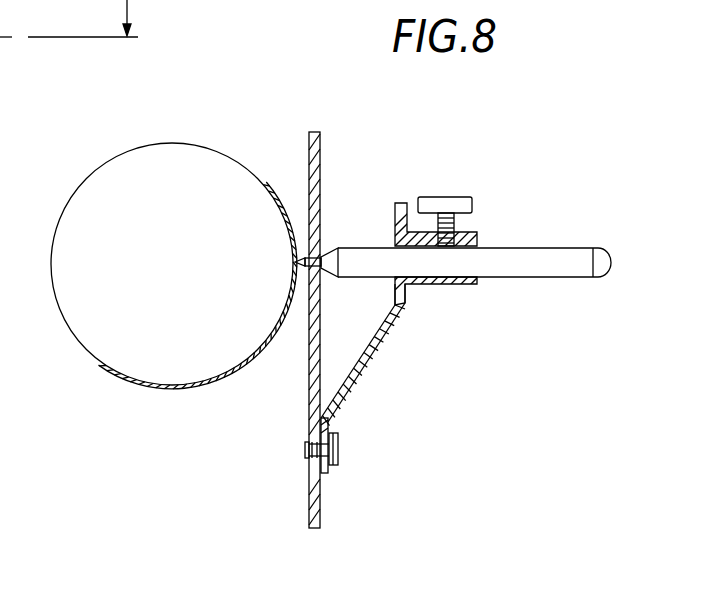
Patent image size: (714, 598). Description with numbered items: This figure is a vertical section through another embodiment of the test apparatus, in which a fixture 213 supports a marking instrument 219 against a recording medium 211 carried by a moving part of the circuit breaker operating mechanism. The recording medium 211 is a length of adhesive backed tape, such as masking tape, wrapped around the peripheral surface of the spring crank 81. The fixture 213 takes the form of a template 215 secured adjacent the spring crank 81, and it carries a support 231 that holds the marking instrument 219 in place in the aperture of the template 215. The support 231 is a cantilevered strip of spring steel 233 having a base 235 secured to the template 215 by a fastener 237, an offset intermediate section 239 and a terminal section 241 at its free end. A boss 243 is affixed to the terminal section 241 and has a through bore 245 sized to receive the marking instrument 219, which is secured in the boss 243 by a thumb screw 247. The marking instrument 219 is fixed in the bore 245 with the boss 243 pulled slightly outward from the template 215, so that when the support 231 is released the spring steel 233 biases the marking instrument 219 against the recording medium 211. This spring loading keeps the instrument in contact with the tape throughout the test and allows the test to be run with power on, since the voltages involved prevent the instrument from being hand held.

The spring crank 81 is at (53, 237).
The recording medium 211 is at (139, 383).
The fixture 213 is at (516, 134).
The template 215 is at (321, 148).
The marking instrument 219 is at (550, 268).
The support 231 is at (368, 380).
The cantilevered strip of spring steel 233 is at (402, 364).
The base 235 is at (326, 473).
The fastener 237 is at (338, 452).
The offset intermediate section 239 is at (342, 397).
The terminal section 241 is at (406, 293).
The boss 243 is at (468, 281).
The through bore 245 is at (478, 242).
The thumb screw 247 is at (430, 200).